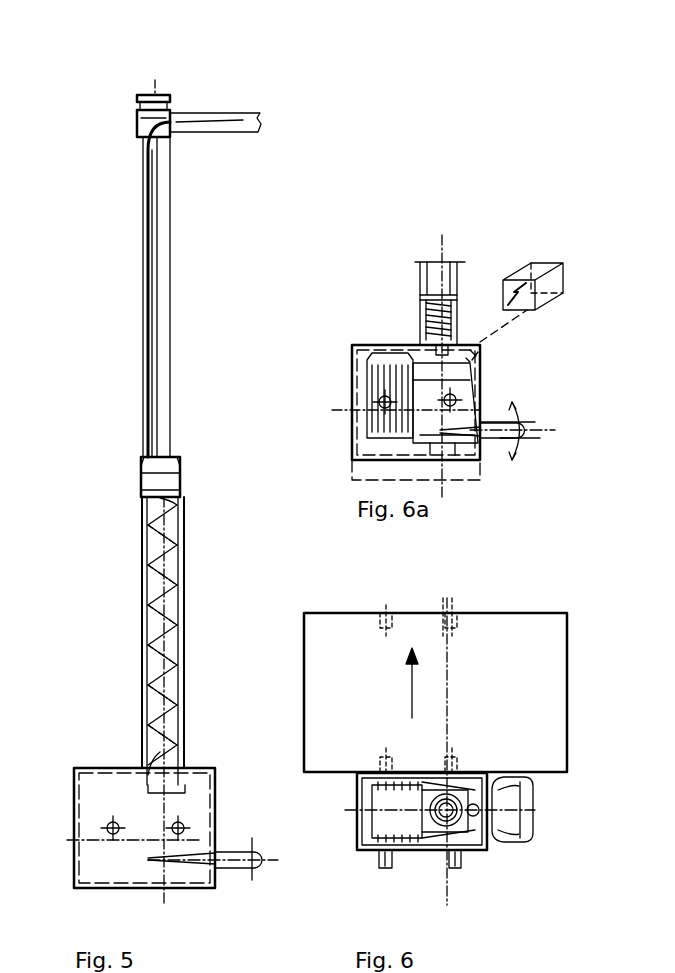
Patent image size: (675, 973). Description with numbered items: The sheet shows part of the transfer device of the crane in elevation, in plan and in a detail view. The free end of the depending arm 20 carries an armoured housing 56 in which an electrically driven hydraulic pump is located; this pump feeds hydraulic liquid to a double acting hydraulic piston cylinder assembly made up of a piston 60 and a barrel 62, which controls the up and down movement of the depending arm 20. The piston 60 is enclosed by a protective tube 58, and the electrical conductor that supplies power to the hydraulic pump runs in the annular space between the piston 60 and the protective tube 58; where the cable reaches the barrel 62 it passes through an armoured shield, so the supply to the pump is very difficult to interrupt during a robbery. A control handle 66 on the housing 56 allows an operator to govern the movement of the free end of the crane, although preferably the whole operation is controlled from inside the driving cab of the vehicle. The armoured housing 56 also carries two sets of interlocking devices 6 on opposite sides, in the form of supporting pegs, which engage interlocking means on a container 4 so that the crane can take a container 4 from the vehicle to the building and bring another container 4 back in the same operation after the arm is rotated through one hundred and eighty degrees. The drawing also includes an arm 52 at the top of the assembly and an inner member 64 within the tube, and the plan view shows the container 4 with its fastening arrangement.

In FIG. 6, the container 4 is at (548, 705).
In FIG. 6, the interlocking devices 6 is at (450, 868).
In FIG. 5, the depending arm 20 is at (117, 505).
In FIG. 5, the handle arm 52 is at (243, 120).
In FIG. 5, the armoured housing 56 is at (100, 770).
In FIG. 6, the armoured housing 56 is at (487, 848).
In FIG. 5, the protective tube 58 is at (143, 645).
In FIG. 5, the piston 60 is at (165, 568).
In FIG. 5, the barrel 62 is at (164, 287).
In FIG. 5, the actuating rod 64 is at (152, 322).
In FIG. 5, the control handle 66 is at (236, 858).
In FIG. 6, the control handle 66 is at (525, 823).